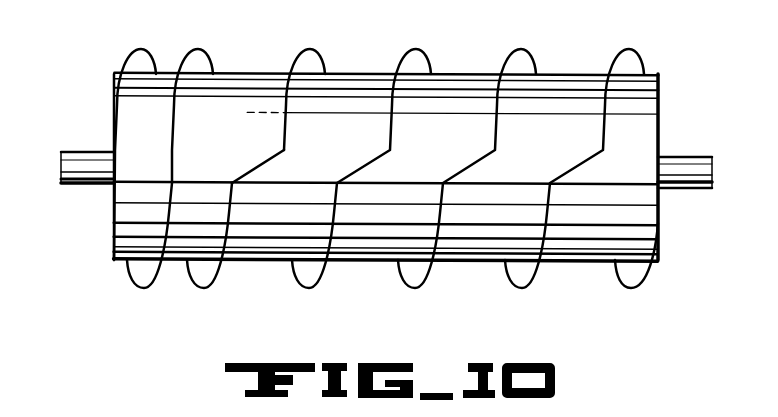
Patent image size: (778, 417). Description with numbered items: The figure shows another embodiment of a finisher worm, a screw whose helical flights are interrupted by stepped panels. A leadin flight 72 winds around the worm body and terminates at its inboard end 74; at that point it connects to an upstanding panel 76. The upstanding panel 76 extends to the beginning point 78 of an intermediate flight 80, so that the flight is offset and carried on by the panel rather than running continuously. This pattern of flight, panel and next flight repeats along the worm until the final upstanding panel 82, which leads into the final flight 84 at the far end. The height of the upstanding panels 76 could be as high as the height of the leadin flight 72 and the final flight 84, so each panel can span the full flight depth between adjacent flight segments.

The leadin flight 72 is at (195, 50).
The inboard end 74 is at (229, 188).
The upstanding panel 76 is at (255, 167).
The beginning point 78 is at (283, 149).
The intermediate flight 80 is at (295, 264).
The final upstanding panel 82 is at (570, 173).
The final flight 84 is at (641, 66).